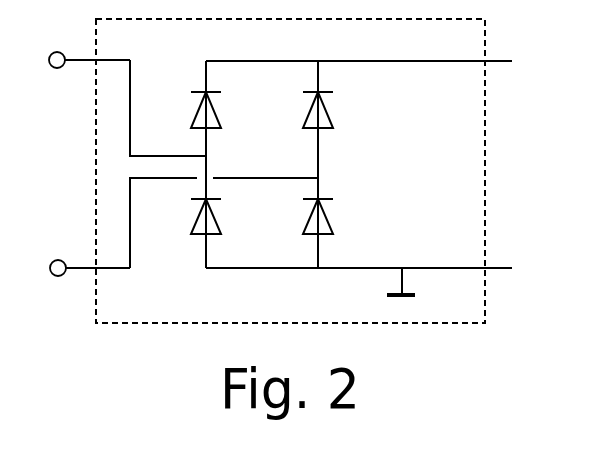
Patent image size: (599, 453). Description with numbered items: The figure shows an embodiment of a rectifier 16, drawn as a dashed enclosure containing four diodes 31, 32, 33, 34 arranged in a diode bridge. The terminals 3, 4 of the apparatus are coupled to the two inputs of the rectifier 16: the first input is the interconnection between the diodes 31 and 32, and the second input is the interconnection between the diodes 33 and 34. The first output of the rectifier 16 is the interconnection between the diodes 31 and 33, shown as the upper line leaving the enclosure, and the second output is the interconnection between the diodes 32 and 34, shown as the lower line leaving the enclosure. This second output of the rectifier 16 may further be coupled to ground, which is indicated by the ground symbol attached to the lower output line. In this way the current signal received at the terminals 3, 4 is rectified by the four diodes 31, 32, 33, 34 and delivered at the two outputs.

The terminal 3 is at (89, 44).
The terminal 4 is at (90, 286).
The rectifier 16 is at (445, 323).
The diode 31 is at (221, 110).
The diode 32 is at (221, 216).
The diode 33 is at (335, 110).
The diode 34 is at (335, 216).